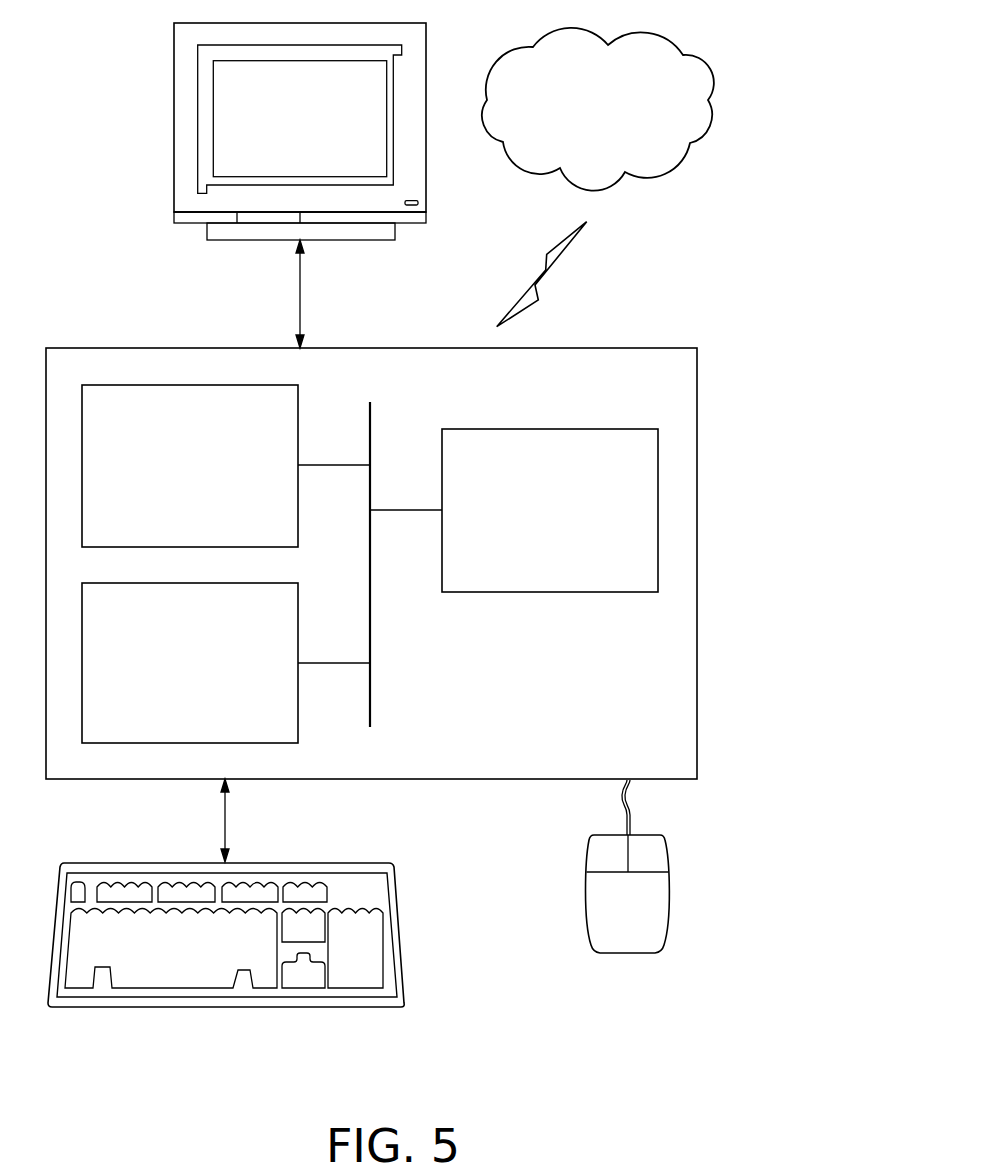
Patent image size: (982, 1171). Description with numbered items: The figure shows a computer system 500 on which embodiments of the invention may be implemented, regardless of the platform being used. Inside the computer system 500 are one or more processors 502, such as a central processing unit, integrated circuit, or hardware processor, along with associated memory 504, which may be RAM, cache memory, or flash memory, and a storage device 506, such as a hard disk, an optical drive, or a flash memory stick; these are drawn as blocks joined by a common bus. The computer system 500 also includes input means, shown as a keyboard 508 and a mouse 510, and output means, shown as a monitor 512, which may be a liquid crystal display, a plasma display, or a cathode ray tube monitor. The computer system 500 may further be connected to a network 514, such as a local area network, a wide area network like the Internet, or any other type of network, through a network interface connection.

The computer system 500 is at (750, 274).
The processor 502 is at (530, 536).
The memory 504 is at (170, 493).
The storage device 506 is at (170, 689).
The keyboard 508 is at (155, 974).
The mouse 510 is at (608, 931).
The monitor 512 is at (278, 139).
The network 514 is at (580, 133).